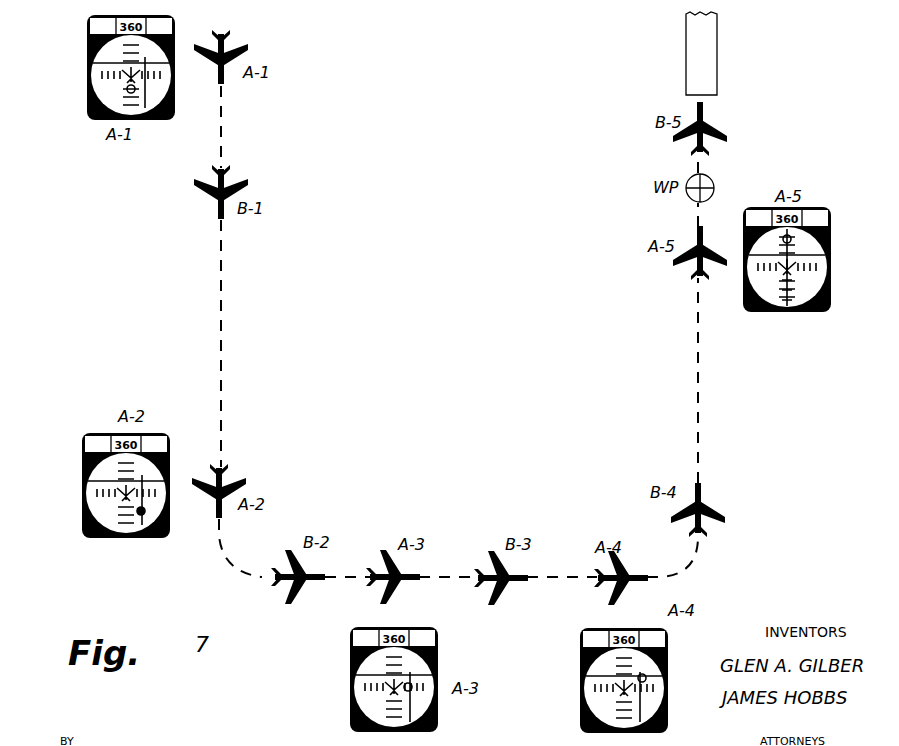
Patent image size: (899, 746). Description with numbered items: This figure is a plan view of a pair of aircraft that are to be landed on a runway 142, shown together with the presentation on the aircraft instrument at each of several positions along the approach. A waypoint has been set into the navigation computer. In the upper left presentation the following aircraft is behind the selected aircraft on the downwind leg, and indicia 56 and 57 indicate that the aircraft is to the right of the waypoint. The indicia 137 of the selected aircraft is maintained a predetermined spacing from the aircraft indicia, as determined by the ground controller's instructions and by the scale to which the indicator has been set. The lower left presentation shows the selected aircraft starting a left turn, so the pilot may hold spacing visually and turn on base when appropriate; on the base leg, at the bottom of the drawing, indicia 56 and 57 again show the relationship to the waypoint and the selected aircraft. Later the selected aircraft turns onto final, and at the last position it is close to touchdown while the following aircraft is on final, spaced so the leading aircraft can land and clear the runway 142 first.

The indicia 56 is at (100, 88).
The indicia 57 is at (160, 72).
The indicia of the selected aircraft 137 is at (134, 93).
The runway 142 is at (711, 50).